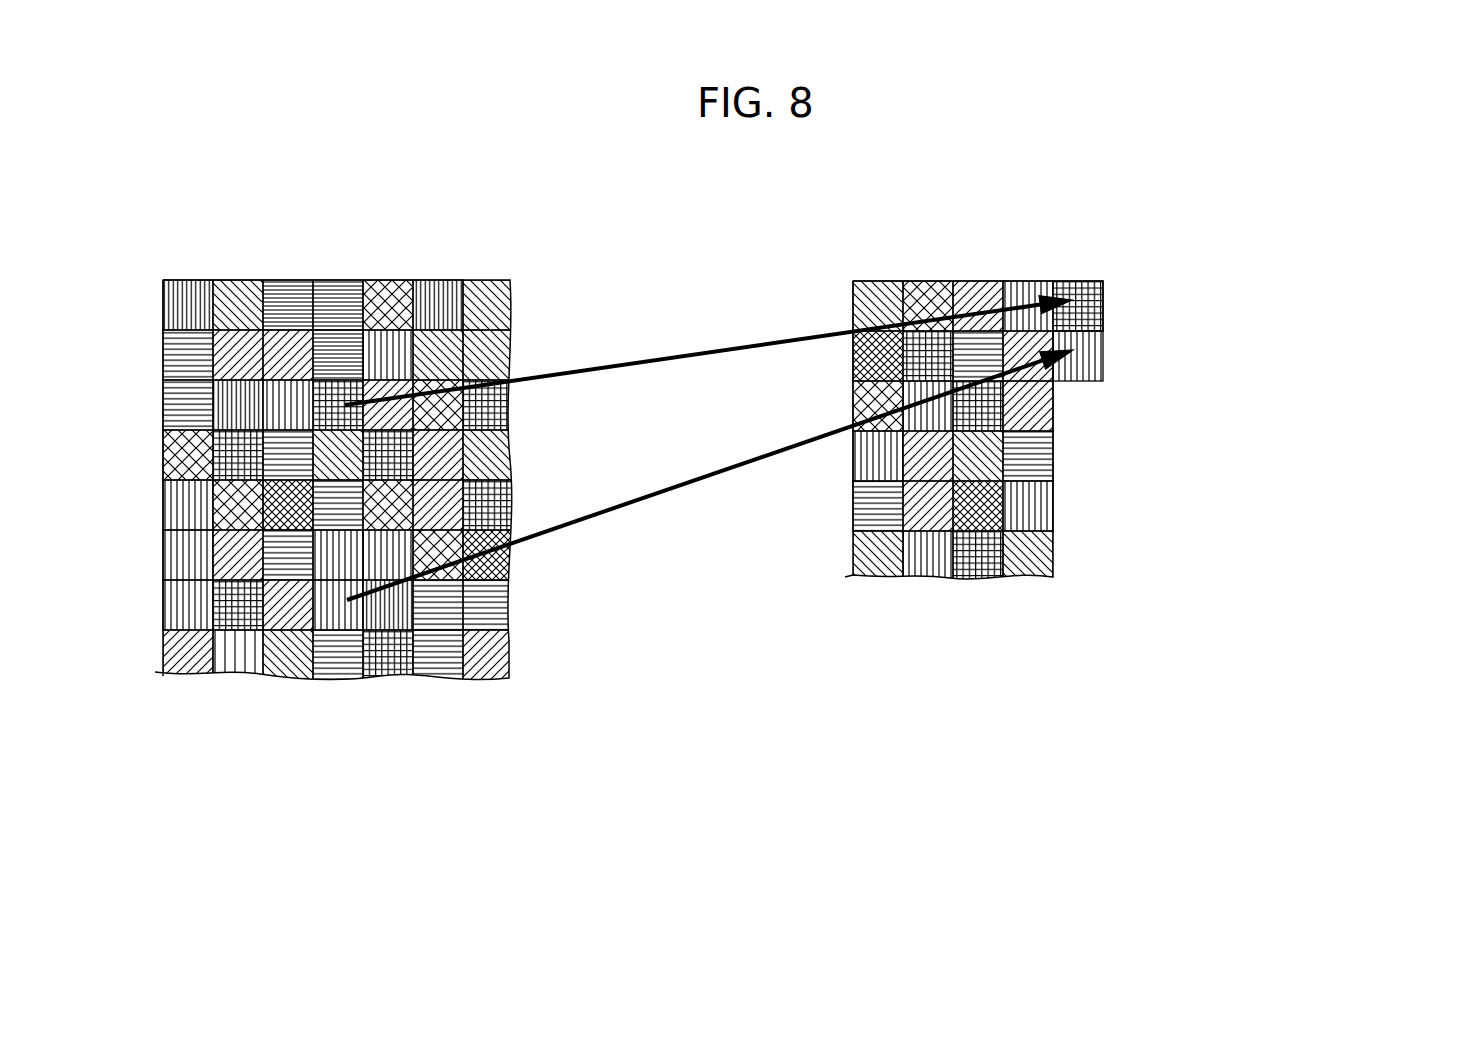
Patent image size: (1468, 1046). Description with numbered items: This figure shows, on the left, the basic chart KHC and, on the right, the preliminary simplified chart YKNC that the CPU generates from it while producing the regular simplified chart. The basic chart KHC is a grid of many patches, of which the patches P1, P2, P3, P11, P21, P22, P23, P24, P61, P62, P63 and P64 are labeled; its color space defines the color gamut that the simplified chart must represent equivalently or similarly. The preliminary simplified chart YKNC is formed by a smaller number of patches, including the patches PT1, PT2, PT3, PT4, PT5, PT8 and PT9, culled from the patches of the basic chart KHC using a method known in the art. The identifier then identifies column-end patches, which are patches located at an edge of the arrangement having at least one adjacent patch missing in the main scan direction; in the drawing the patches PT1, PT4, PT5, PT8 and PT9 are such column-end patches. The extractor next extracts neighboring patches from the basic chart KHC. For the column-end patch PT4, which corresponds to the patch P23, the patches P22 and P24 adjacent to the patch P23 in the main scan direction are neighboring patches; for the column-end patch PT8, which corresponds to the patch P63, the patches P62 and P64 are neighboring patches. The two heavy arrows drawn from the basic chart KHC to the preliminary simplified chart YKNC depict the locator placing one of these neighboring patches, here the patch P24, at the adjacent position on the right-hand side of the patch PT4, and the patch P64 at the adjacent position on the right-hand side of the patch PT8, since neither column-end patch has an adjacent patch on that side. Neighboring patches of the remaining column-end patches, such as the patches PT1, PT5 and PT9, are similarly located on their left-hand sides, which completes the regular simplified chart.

The patch P1 is at (193, 292).
The patch P2 is at (243, 292).
The patch P3 is at (295, 293).
The patch P11 is at (180, 364).
The patch P21 is at (180, 413).
The neighboring patch RSP P22 is at (240, 403).
The patch P23 is at (293, 378).
The neighboring patch RSP P24 is at (345, 392).
The patch P61 is at (180, 610).
The neighboring patch RSP P62 is at (240, 612).
The patch P63 is at (288, 595).
The neighboring patch RSP P64 is at (340, 610).
The basic chart KHC is at (522, 679).
The preliminary simplified chart YKNC is at (1073, 485).
The column-end patch RHP PT1 is at (853, 303).
The patch PT2 is at (930, 290).
The patch PT3 is at (980, 292).
The column-end patch RHP PT4 is at (1042, 292).
The column-end patch RHP PT5 is at (853, 358).
The column-end patch RHP PT8 is at (1045, 370).
The column-end patch RHP PT9 is at (853, 405).